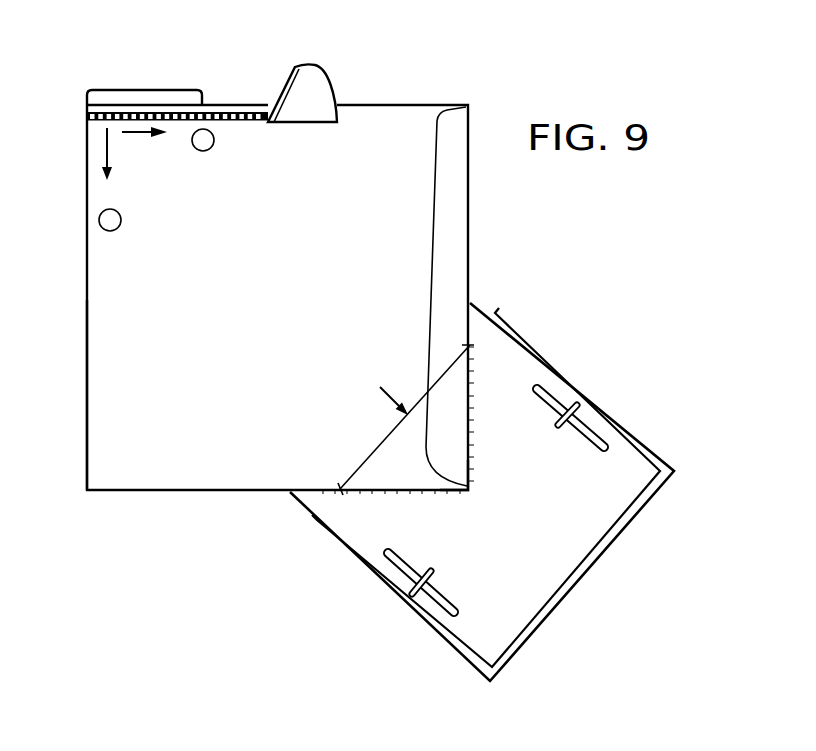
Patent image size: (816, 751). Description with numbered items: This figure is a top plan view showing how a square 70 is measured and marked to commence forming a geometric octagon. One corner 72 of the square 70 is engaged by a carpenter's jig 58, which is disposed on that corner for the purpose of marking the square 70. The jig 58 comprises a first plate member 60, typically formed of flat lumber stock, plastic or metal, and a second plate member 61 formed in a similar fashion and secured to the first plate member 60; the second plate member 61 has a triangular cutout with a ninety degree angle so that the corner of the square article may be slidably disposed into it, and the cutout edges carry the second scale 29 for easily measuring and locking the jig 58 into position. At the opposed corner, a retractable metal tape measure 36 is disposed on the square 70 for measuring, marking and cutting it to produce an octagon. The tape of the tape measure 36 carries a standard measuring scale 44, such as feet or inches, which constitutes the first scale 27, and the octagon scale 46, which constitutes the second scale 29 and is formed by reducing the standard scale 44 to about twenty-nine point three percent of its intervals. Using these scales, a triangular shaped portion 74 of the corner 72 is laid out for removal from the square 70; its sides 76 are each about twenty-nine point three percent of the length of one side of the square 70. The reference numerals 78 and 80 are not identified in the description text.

The square 70 is at (286, 305).
The sides of triangular portion 76 is at (147, 91).
The fastener 80 is at (176, 179).
The first scale 27 is at (237, 135).
The standard measuring scale 44 is at (204, 144).
The second scale 29 is at (253, 95).
The octagon scale 46 is at (422, 195).
The retractable metal tape measure 36 is at (422, 195).
The mat edge 78 is at (88, 393).
The triangular shaped portion 74 is at (406, 420).
The corner 72 is at (463, 484).
The jig 58 is at (489, 453).
The first plate member 60 is at (603, 403).
The second plate member 61 is at (605, 480).